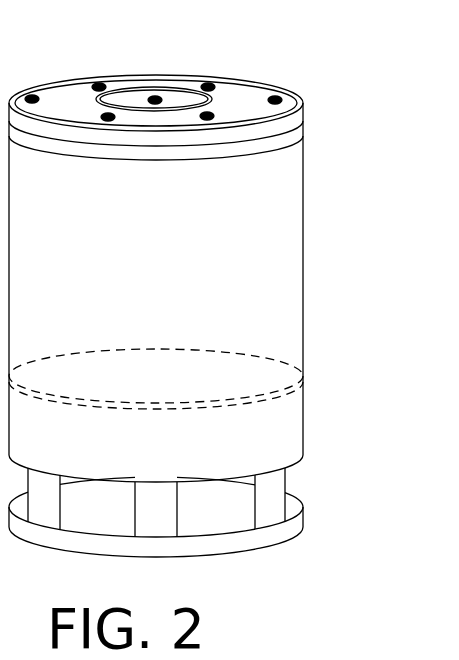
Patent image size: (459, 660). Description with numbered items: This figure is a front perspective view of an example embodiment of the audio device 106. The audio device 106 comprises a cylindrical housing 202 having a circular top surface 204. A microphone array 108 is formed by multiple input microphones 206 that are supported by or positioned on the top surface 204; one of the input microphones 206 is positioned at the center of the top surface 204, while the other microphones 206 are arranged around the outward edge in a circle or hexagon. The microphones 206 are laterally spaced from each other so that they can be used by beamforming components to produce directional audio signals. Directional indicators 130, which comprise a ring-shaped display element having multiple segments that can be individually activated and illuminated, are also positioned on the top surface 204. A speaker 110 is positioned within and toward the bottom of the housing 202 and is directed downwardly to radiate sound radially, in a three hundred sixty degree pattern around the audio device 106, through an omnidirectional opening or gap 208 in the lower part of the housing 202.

The audio device 106 is at (191, 305).
The microphone array 108 is at (128, 78).
The speaker 110 is at (288, 393).
The directional indicators 130 is at (160, 87).
The cylindrical housing 202 is at (263, 194).
The circular top surface 204 is at (304, 99).
The input microphones 206 is at (105, 114).
The omnidirectional opening or gap 208 is at (207, 512).